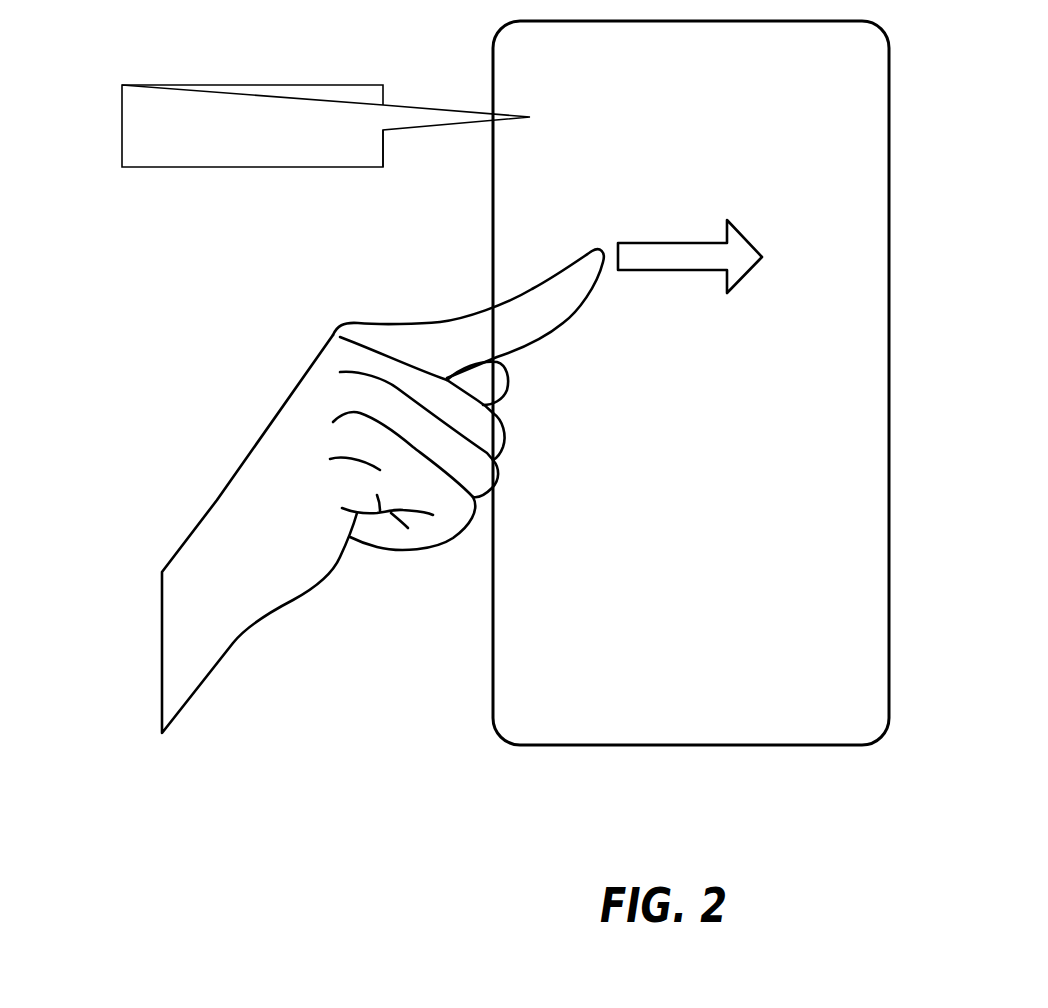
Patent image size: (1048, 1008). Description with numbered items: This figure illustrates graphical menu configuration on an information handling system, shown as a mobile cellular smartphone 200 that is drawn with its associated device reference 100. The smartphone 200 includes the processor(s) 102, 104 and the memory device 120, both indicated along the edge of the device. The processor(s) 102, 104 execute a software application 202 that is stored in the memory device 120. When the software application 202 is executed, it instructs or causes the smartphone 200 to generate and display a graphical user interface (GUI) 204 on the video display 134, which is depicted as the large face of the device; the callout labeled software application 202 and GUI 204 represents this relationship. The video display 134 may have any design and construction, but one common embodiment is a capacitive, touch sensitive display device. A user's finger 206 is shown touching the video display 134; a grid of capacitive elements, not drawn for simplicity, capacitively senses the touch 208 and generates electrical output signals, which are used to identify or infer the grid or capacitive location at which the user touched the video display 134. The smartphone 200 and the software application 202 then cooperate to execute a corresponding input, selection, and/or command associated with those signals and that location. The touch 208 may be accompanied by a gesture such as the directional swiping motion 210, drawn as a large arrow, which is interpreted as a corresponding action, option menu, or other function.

The electronic device 100 is at (493, 46).
The mobile cellular smartphone 200 is at (890, 45).
The processor 102 is at (755, 383).
The processor 104 is at (869, 131).
The memory device 120 is at (869, 204).
The video display 134 is at (710, 160).
The software application 202 is at (254, 85).
The graphical user interface 204 is at (219, 167).
The user's finger 206 is at (438, 321).
The touch 208 is at (563, 324).
The directional swiping motion 210 is at (749, 272).